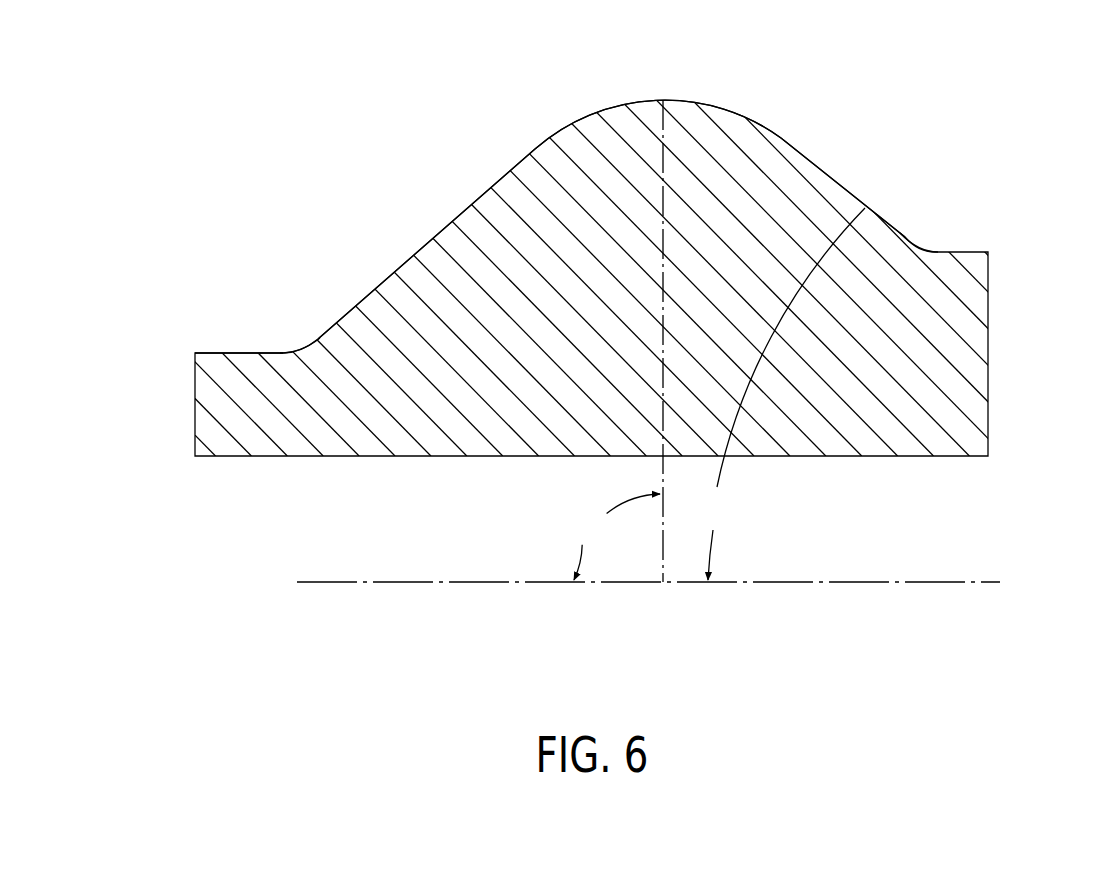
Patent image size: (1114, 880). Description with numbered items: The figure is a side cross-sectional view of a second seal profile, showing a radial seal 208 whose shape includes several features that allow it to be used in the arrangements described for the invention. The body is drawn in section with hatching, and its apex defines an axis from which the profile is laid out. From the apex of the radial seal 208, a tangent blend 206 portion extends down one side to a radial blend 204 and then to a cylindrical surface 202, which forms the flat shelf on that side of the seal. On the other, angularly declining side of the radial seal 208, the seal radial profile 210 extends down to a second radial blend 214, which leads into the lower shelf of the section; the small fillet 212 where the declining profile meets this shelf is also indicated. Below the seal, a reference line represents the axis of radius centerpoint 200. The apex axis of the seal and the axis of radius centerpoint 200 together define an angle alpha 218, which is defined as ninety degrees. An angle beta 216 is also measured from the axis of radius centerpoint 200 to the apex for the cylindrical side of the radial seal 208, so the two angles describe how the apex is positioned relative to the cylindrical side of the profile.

The axis of radius centerpoint 200 is at (985, 580).
The cylindrical surface 202 is at (964, 249).
The radial blend 204 is at (914, 245).
The tangent blend 206 is at (847, 188).
The radial seal 208 is at (557, 130).
The seal radial profile 210 is at (427, 240).
The left fillet 212 is at (302, 346).
The second radial blend 214 is at (220, 348).
The angle β 216 is at (781, 394).
The angle α 218 is at (565, 530).